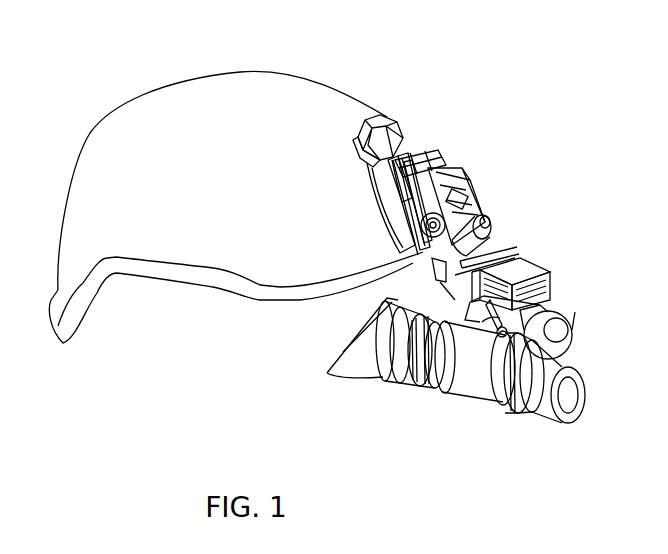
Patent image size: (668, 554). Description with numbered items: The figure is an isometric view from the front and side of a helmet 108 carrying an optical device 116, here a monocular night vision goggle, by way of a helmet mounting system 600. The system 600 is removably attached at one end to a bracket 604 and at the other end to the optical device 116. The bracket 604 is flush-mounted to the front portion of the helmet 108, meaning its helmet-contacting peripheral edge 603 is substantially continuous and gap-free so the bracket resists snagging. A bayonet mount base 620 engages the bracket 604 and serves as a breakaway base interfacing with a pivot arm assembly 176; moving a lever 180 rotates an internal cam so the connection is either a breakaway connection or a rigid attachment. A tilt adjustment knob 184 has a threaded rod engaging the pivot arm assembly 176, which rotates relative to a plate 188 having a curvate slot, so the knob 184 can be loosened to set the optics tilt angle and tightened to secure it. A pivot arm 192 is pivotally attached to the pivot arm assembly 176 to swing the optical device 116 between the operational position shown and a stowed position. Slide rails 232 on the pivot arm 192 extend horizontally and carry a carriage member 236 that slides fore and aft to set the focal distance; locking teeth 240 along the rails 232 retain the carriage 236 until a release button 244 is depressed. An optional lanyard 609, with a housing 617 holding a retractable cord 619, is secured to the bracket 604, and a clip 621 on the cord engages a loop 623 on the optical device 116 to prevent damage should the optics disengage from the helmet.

The helmet 108 is at (191, 74).
The optical device 116 is at (482, 393).
The pivot arm assembly 176 is at (478, 201).
The lever 180 is at (458, 201).
The tilt adjustment knob 184 is at (422, 235).
The plate 188 is at (433, 250).
The pivot arm 192 is at (437, 266).
The slide rails 232 is at (505, 253).
The carriage member 236 is at (545, 278).
The locking teeth 240 is at (498, 248).
The release button 244 is at (563, 305).
The helmet mounting system 600 is at (472, 140).
The helmet-contacting peripheral edge 603 is at (377, 184).
The bracket 604 is at (403, 218).
The lanyard 609 is at (387, 112).
The housing 617 is at (368, 123).
The retractable cord 619 is at (387, 165).
The bayonet mount base 620 is at (434, 142).
The clip 621 is at (486, 311).
The loop 623 is at (493, 327).